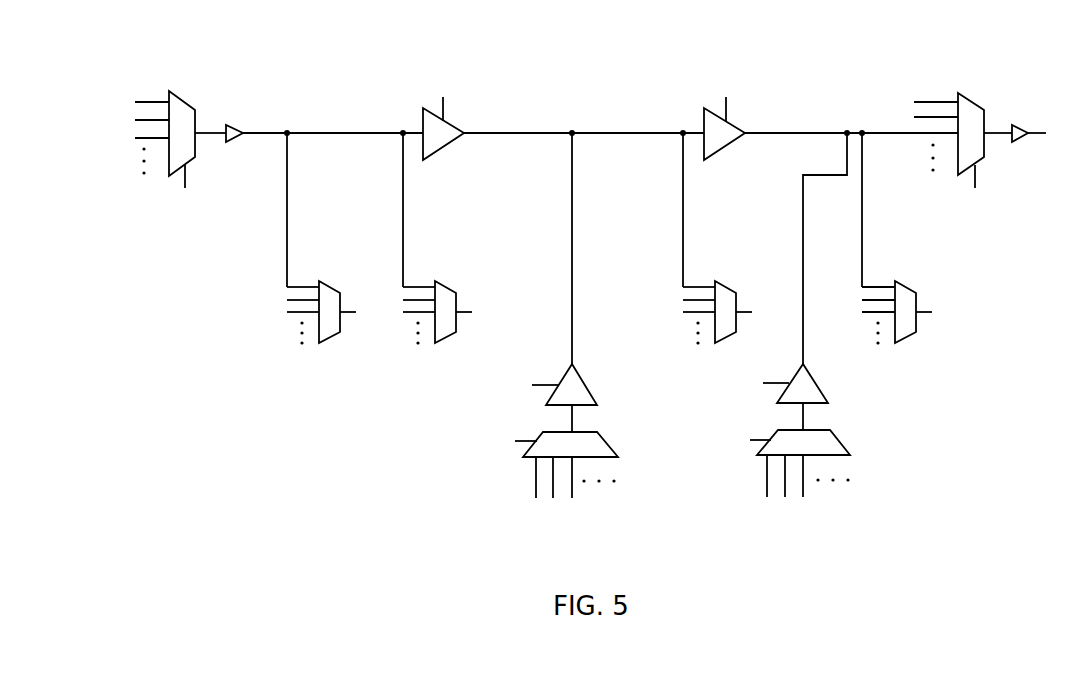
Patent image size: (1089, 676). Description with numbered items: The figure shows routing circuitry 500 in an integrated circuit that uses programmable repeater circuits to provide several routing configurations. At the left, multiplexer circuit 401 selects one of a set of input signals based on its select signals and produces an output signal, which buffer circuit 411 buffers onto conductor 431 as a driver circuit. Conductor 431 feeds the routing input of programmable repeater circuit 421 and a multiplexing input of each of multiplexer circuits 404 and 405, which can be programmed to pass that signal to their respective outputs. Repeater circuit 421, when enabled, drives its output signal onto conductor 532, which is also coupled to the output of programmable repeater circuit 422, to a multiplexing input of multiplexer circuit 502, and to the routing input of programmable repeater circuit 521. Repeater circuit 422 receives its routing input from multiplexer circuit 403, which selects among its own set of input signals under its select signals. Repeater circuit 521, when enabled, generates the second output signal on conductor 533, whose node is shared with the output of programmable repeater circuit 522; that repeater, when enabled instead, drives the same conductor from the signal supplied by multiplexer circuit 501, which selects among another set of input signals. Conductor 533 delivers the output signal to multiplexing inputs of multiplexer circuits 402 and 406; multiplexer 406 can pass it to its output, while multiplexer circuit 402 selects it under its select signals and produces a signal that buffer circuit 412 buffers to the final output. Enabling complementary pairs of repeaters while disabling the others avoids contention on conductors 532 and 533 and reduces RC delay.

The routing circuitry 500 is at (255, 36).
The multiplexer circuit 401 is at (183, 99).
The multiplexer circuit 402 is at (972, 100).
The multiplexer circuit 403 is at (607, 440).
The multiplexer circuit 404 is at (330, 290).
The multiplexer circuit 405 is at (446, 290).
The multiplexer circuit 406 is at (906, 290).
The buffer circuit 411 is at (237, 125).
The buffer circuit 412 is at (1022, 125).
The programmable repeater circuit 421 is at (443, 147).
The programmable repeater circuit 422 is at (585, 383).
The conductor 431 is at (371, 144).
The multiplexer circuit 501 is at (840, 438).
The multiplexer circuit 502 is at (726, 290).
The programmable repeater circuit 521 is at (724, 147).
The programmable repeater circuit 522 is at (816, 381).
The conductor 532 is at (647, 144).
The conductor 533 is at (813, 120).